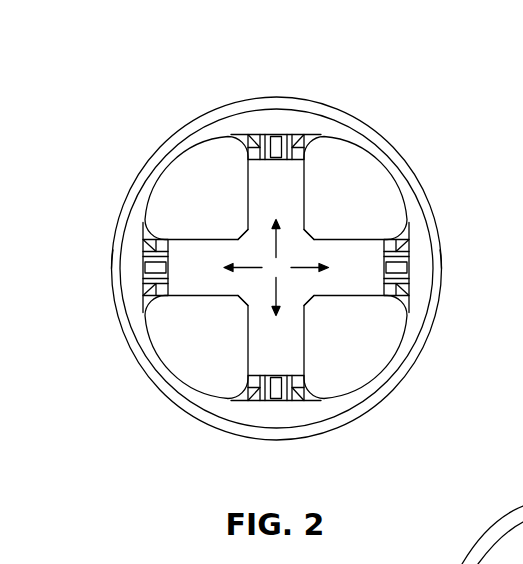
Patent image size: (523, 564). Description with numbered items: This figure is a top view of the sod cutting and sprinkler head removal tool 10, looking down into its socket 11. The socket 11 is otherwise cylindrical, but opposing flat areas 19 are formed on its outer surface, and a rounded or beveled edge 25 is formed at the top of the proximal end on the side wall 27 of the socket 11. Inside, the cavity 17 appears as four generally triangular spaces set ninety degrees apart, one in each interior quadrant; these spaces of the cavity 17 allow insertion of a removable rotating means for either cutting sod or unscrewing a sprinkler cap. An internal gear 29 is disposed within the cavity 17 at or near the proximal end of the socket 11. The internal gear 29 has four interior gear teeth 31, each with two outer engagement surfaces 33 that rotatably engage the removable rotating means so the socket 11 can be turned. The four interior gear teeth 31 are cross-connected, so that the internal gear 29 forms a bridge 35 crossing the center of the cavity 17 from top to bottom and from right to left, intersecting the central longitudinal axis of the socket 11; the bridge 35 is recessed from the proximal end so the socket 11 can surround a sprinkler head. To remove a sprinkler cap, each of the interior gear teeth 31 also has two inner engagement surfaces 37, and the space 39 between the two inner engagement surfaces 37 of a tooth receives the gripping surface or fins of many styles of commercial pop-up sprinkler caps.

The sod cutting and sprinkler head removal tool 10 is at (258, 26).
The socket 11 is at (145, 120).
The cavity 17 is at (282, 266).
The opposing flat areas 19 is at (445, 262).
The rounded or beveled edge 25 is at (413, 352).
The side wall 27 is at (407, 199).
The internal gear 29 is at (276, 268).
The interior gear teeth 31 is at (276, 268).
The outer engagement surfaces 33 is at (276, 268).
The bridge 35 is at (289, 257).
The inner engagement surfaces 37 is at (276, 264).
The space 39 is at (288, 268).